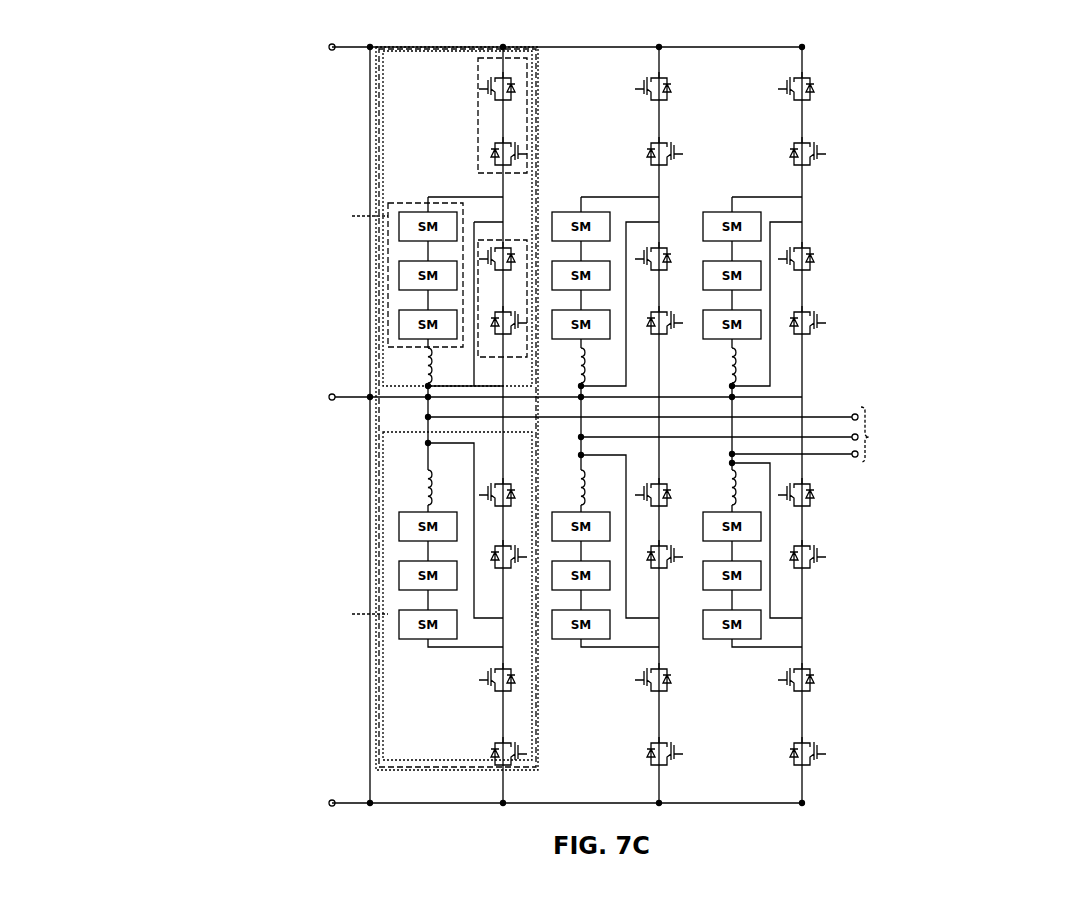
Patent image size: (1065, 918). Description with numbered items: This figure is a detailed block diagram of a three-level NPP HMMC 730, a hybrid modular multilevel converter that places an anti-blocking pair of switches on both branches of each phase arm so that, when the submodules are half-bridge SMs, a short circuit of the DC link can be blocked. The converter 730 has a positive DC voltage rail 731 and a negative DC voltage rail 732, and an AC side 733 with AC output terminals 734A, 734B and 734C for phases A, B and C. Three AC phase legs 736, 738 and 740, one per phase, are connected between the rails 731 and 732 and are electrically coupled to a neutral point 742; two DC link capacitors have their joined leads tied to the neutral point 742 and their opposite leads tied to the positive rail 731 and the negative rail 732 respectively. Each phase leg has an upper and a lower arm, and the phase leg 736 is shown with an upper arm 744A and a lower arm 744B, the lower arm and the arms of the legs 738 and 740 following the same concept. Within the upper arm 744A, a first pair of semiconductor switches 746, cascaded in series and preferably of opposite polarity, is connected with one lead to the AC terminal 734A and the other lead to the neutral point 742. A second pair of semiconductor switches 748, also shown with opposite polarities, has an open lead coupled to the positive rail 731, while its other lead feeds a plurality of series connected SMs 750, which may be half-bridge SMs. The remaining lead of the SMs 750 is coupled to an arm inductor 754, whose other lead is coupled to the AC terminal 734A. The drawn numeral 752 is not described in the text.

The 3-level NPP HMMC 730 is at (876, 43).
The positive DC voltage rail 731 is at (327, 49).
The negative DC voltage rail 732 is at (327, 809).
The AC side 733 is at (869, 437).
The AC output terminal 734A is at (452, 414).
The AC output terminal 734B is at (604, 420).
The AC output terminal 734C is at (709, 424).
The AC phase leg 736 is at (409, 441).
The AC phase leg 738 is at (662, 810).
The AC phase leg 740 is at (805, 810).
The neutral point 742 is at (322, 397).
The upper arm 744A is at (370, 381).
The lower arm 744B is at (378, 447).
The first pair of semiconductor switches 746 is at (510, 235).
The second pair of semiconductor switches 748 is at (458, 140).
The series connected SMs 750 is at (390, 195).
The arm inductor 752 is at (418, 372).
The arm inductor 754 is at (422, 384).